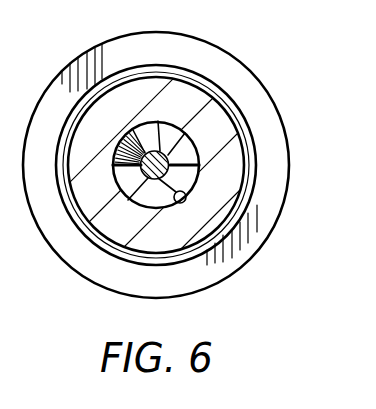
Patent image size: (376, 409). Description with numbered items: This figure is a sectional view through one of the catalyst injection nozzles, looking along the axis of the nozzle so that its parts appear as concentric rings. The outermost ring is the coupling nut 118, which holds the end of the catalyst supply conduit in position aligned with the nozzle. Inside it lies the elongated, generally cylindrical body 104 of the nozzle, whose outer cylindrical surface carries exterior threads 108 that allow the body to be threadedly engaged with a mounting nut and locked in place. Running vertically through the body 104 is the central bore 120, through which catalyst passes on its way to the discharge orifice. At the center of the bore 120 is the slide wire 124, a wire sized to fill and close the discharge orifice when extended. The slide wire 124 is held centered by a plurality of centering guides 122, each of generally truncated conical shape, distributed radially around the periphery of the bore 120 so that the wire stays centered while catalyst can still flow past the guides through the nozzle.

The body 104 is at (237, 162).
The exterior threads 108 is at (243, 107).
The coupling nut 118 is at (241, 63).
The central bore 120 is at (163, 200).
The centering guides 122 is at (122, 141).
The slide wire 124 is at (151, 114).